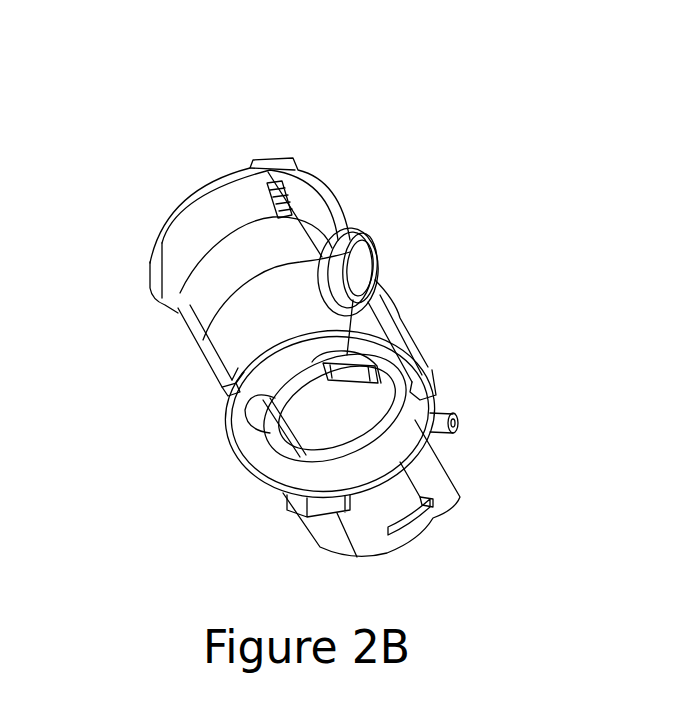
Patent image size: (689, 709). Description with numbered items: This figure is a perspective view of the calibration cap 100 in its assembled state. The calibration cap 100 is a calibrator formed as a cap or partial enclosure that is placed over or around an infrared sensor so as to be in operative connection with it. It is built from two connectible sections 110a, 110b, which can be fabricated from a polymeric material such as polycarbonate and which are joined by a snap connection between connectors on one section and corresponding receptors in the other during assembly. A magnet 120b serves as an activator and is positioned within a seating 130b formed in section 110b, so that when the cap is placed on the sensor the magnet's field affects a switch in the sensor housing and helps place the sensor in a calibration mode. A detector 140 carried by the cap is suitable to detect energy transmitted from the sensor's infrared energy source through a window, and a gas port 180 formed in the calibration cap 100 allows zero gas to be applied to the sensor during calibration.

The calibration cap 100 is at (377, 128).
The section 110a is at (190, 351).
The section 110b is at (413, 318).
The magnet 120b is at (357, 270).
The seating 130b is at (353, 235).
The detector 140 is at (357, 373).
The gas port 180 is at (467, 420).